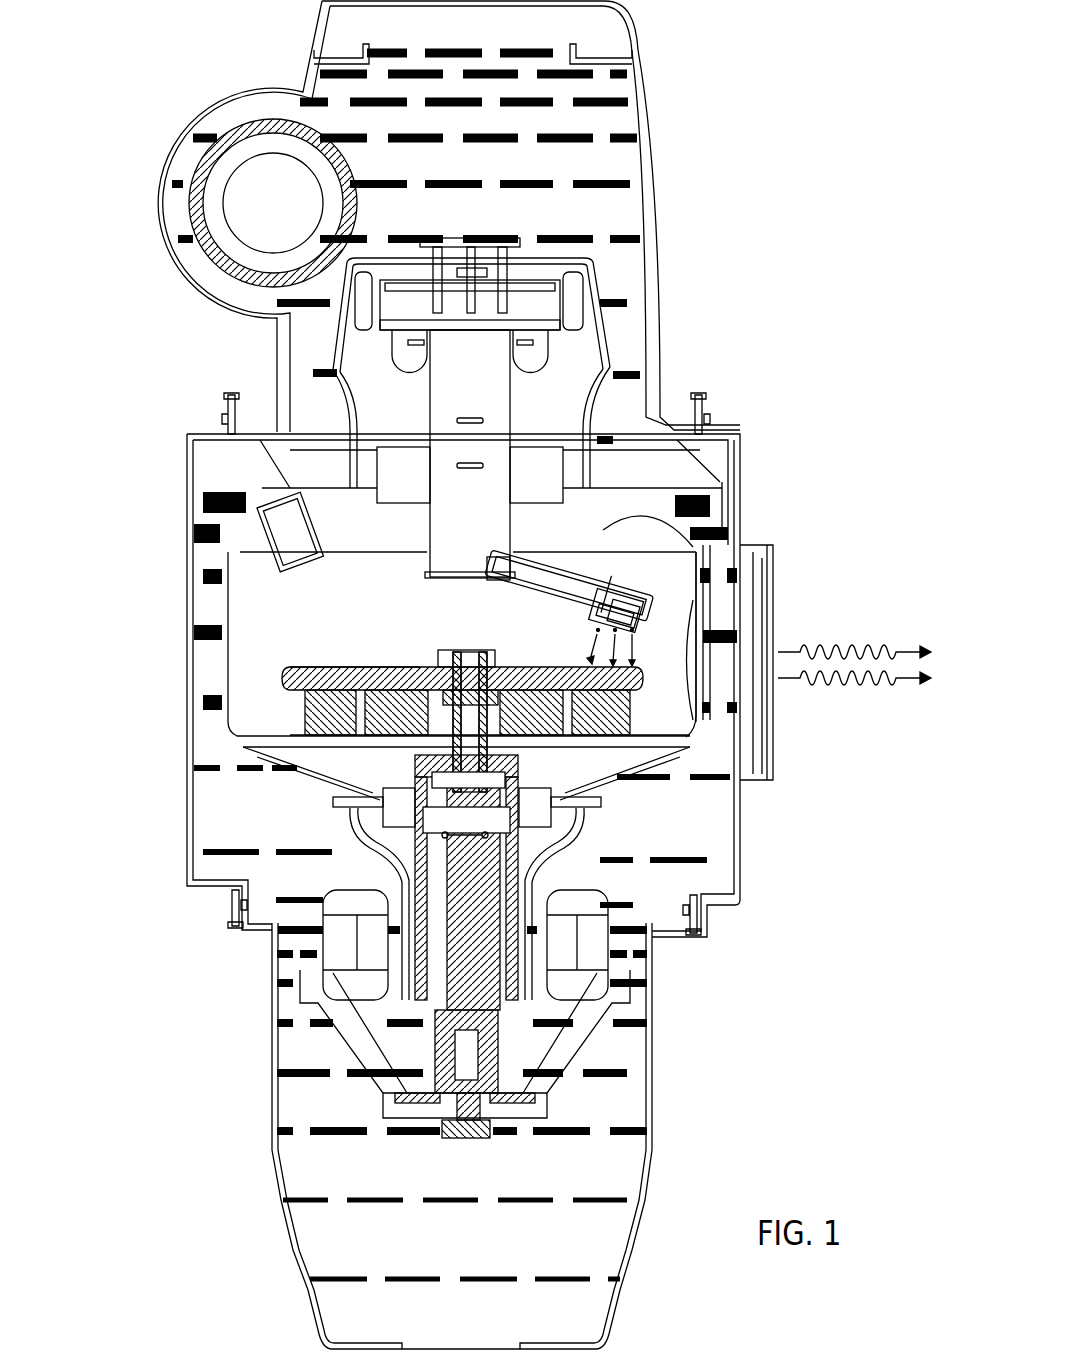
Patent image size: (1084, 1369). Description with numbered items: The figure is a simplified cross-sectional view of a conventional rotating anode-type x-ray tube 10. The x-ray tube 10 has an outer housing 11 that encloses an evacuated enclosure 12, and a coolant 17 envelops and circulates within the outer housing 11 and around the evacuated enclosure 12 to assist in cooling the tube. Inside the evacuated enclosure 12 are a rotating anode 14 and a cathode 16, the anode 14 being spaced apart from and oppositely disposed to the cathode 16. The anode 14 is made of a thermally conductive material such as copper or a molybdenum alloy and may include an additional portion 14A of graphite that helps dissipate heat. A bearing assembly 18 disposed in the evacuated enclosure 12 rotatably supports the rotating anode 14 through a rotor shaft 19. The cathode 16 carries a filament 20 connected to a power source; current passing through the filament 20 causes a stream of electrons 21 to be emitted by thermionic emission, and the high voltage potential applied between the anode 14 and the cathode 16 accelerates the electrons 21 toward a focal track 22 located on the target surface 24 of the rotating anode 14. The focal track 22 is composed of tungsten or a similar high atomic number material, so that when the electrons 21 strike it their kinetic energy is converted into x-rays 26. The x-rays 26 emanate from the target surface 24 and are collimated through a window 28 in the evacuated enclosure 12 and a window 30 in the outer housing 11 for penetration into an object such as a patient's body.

The x-ray tube 10 is at (168, 68).
The outer housing 11 is at (159, 199).
The evacuated enclosure 12 is at (226, 605).
The rotating anode 14 is at (410, 658).
The additional portion 14A is at (304, 717).
The cathode 16 is at (552, 592).
The coolant 17 is at (195, 795).
The bearing assembly 18 is at (530, 840).
The rotor shaft 19 is at (548, 789).
The filament 20 is at (655, 630).
The electrons 21 is at (590, 636).
The focal track 22 is at (331, 665).
The target surface 24 is at (490, 656).
The x-rays 26 is at (878, 645).
The window 28 is at (688, 671).
The window 30 is at (773, 612).